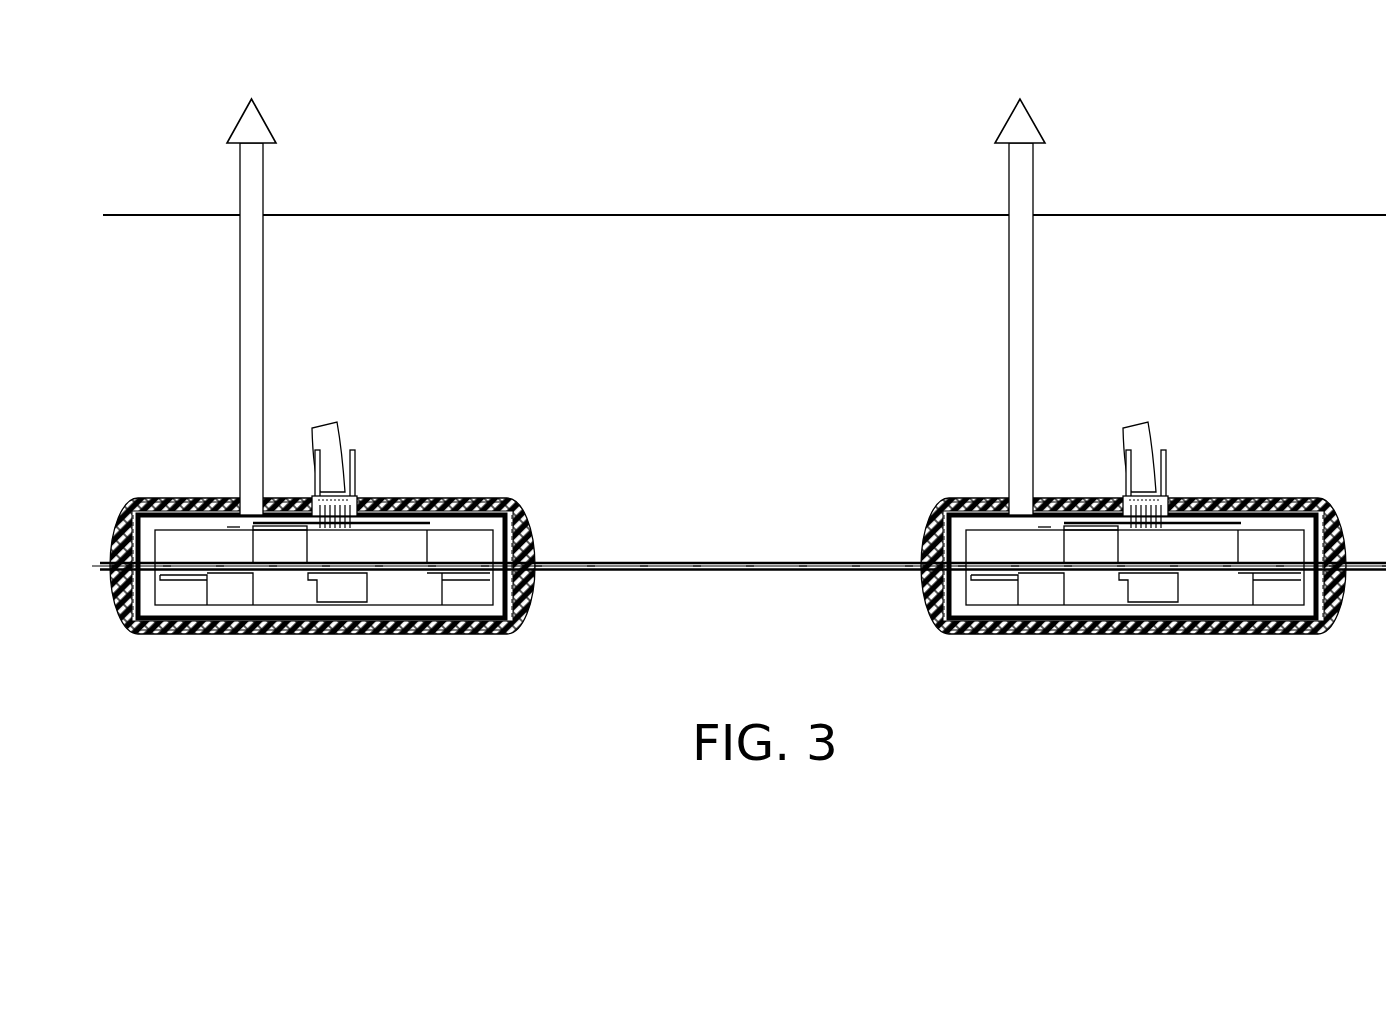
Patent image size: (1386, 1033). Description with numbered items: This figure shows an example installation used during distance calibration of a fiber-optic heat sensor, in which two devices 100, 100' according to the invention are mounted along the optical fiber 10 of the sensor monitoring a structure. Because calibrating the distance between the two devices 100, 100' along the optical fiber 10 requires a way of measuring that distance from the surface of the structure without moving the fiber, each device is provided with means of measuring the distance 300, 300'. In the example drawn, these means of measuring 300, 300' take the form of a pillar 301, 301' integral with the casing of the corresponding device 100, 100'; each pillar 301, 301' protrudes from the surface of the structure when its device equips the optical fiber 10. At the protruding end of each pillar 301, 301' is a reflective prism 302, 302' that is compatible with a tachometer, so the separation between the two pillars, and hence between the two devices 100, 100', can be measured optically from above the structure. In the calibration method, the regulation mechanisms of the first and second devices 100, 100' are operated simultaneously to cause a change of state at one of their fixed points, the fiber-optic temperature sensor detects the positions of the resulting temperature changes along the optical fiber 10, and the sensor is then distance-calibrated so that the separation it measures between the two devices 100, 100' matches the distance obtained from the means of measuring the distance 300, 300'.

The optical fiber 10 is at (865, 570).
The device 100 is at (322, 498).
The device 100' is at (1133, 498).
The means of measuring the distance 300 is at (387, 307).
The means of measuring the distance 300' is at (1156, 305).
The pillar 301 is at (360, 329).
The pillar 301' is at (1130, 329).
The reflective prism 302 is at (354, 121).
The reflective prism 302' is at (1123, 121).